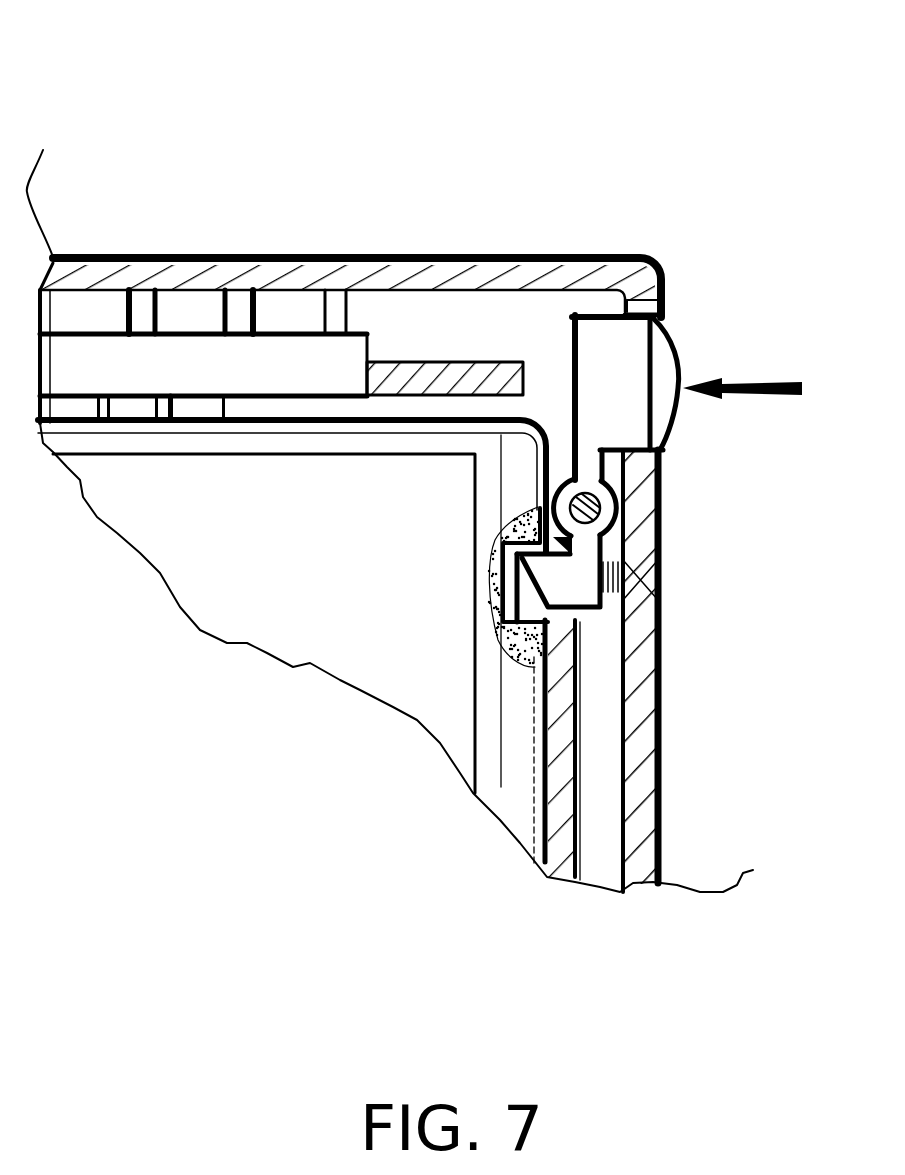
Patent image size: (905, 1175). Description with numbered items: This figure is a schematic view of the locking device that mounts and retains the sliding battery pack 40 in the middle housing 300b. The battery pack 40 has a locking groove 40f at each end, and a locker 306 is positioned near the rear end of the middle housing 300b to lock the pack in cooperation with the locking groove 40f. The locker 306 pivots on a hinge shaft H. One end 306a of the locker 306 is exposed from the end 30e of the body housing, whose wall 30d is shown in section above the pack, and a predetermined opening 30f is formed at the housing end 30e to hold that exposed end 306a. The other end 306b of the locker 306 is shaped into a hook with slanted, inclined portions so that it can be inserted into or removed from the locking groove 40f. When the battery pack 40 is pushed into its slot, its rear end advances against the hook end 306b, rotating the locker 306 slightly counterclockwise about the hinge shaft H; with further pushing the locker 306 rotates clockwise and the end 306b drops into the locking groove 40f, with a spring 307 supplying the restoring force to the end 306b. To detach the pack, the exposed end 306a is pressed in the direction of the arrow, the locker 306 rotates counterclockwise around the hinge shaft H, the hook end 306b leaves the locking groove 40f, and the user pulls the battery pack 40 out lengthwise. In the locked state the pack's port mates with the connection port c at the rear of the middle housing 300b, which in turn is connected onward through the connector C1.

The middle housing 300b is at (338, 238).
The upper cover wall 30d is at (487, 253).
The end of body housing 30e is at (661, 687).
The opening 30f is at (647, 310).
The locker 306 is at (692, 325).
The end of locker 306a is at (637, 395).
The end of locker 306b is at (557, 590).
The spring 307 is at (622, 601).
The hinge shaft H is at (600, 503).
The sliding battery pack 40 is at (292, 590).
The locking groove 40f is at (540, 643).
The connector C1 is at (200, 357).
The connection port c is at (57, 408).